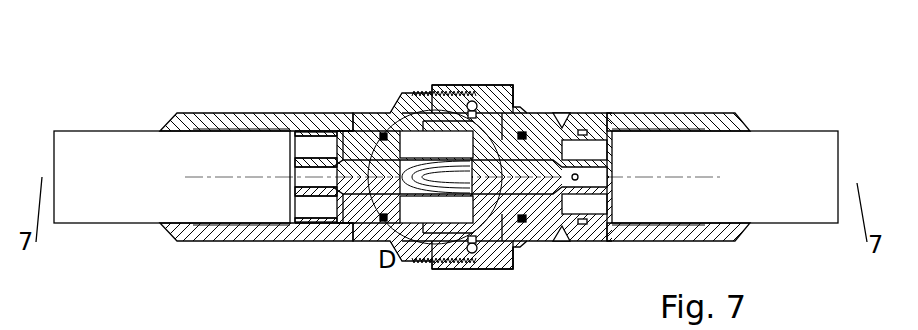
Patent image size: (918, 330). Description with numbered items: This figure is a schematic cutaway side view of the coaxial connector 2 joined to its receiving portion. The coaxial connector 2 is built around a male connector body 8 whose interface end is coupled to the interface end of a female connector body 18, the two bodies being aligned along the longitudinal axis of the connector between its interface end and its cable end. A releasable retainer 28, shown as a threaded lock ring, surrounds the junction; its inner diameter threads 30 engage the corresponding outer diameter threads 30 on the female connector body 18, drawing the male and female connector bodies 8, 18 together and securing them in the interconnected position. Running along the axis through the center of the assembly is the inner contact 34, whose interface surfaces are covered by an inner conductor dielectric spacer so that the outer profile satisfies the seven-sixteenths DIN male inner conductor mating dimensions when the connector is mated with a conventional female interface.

The coaxial connector 2 is at (328, 98).
The male connector body 8 is at (540, 110).
The female connector body 18 is at (376, 108).
The releasable retainer 28 is at (497, 88).
The threads 30 is at (478, 98).
The inner contact 34 is at (350, 183).